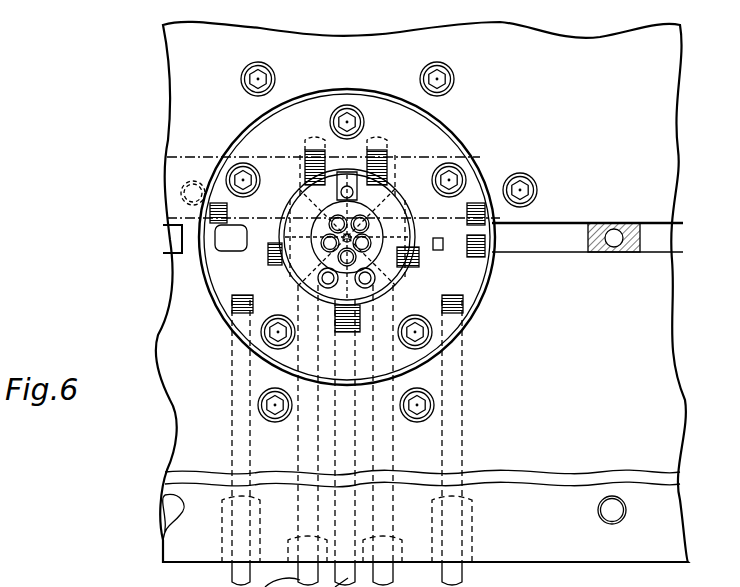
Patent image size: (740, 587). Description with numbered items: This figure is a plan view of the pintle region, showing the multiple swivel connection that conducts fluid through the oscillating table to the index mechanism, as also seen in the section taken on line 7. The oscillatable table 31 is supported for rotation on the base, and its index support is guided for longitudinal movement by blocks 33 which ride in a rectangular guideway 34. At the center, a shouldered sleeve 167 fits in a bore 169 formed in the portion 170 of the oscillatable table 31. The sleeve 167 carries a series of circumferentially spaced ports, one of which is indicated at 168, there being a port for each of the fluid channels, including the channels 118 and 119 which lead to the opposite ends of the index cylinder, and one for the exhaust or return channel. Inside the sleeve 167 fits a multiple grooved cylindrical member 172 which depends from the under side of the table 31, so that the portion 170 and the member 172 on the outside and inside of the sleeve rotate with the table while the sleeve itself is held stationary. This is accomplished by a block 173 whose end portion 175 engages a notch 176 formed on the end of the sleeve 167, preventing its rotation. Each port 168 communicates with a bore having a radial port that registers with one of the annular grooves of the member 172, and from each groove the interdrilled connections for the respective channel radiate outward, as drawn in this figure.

The oscillatable table 31 is at (196, 128).
The block 33 is at (590, 224).
The rectangular guideway 34 is at (176, 243).
The section line 7- 7 is at (347, 165).
The channel 118 is at (240, 573).
The channel 119 is at (465, 572).
The shouldered sleeve 167 is at (438, 170).
The port 168 is at (372, 175).
The bore 169 is at (480, 212).
The portion of the oscillatable table 170 is at (448, 120).
The multiple grooved cylindrical member 172 is at (453, 268).
The block 173 is at (185, 168).
The end portion 175 is at (322, 165).
The notch 176 is at (222, 235).